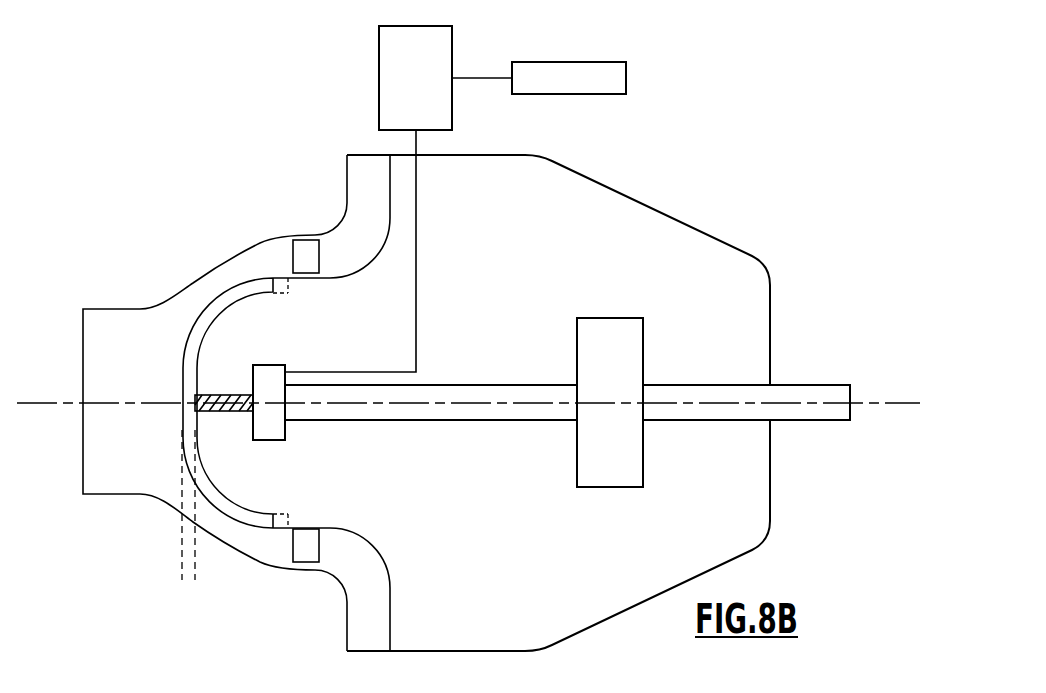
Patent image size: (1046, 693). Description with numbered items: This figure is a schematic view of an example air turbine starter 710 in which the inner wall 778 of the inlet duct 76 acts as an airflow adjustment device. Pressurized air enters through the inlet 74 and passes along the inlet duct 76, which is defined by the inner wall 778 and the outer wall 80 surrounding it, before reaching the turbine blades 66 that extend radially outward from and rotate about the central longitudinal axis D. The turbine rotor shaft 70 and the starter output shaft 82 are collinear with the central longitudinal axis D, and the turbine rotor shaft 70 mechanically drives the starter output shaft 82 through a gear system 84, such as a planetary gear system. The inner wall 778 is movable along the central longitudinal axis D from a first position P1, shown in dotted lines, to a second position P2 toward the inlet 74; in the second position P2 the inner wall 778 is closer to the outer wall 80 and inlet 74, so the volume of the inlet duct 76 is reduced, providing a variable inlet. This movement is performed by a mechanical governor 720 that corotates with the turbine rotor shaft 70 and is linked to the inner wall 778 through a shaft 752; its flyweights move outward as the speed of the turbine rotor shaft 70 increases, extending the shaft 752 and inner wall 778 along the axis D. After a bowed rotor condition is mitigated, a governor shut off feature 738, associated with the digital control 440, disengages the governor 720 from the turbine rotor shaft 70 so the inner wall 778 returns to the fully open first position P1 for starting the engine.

The air turbine starter 710 is at (648, 185).
The governor shut off feature 738 is at (379, 61).
The digital control 440 is at (567, 62).
The central longitudinal axis D is at (885, 404).
The turbine rotor shaft 70 is at (472, 393).
The starter output shaft 82 is at (835, 388).
The gear system 84 is at (615, 330).
The mechanical governor 720 is at (268, 373).
The shaft 752 is at (227, 413).
The inner wall 778 is at (180, 373).
The outer wall 80 is at (195, 280).
The inlet duct 76 is at (143, 470).
The inlet 74 is at (75, 361).
The turbine blades 66 is at (307, 250).
The second position P2 is at (178, 564).
The first position P1 is at (203, 567).